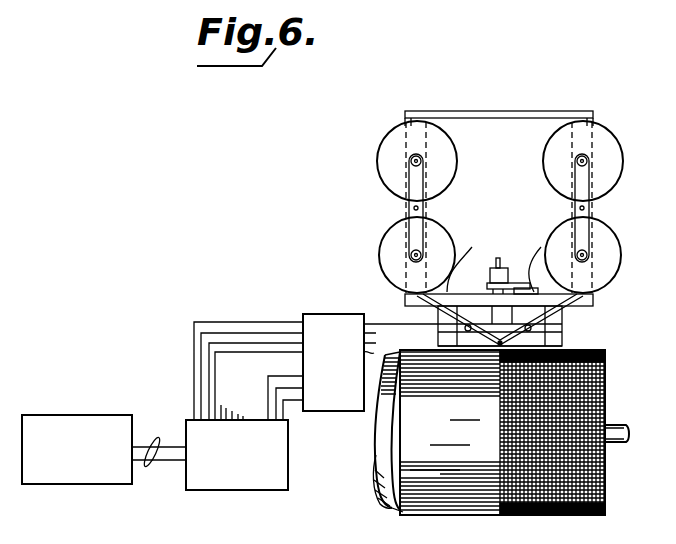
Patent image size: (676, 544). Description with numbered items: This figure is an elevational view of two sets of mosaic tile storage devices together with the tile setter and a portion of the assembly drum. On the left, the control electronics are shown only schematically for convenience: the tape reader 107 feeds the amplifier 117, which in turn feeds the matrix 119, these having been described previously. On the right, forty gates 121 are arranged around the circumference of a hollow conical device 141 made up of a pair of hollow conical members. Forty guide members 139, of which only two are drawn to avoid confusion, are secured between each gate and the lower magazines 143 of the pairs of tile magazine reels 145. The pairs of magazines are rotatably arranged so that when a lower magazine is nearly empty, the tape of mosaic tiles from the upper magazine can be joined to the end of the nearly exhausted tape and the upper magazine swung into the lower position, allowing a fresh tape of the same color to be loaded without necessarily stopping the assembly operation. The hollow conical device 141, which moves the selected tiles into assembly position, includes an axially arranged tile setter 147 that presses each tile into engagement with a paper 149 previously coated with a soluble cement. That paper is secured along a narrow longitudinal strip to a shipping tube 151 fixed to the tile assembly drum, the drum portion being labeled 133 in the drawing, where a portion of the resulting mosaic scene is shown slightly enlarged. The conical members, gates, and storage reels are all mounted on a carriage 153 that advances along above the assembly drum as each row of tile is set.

The tape reader 107 is at (55, 484).
The amplifier 117 is at (248, 492).
The matrix 119 is at (340, 314).
The gate 121 is at (565, 320).
The motor 133 is at (596, 370).
The guide member 139 is at (498, 253).
The hollow conical device 141 is at (558, 332).
The lower magazine 143 is at (380, 252).
The tile magazine reels 145 is at (362, 206).
The tile setter 147 is at (488, 294).
The paper 149 is at (428, 514).
The shipping tube 151 is at (383, 503).
The carriage 153 is at (570, 345).